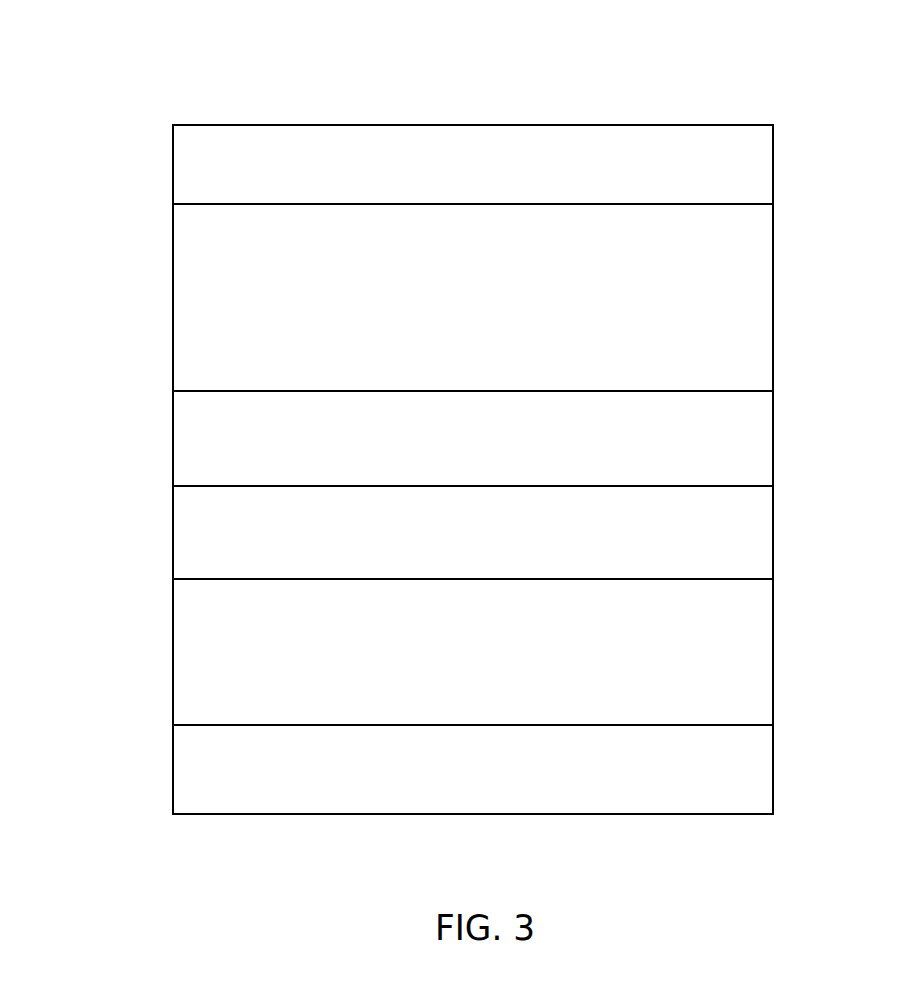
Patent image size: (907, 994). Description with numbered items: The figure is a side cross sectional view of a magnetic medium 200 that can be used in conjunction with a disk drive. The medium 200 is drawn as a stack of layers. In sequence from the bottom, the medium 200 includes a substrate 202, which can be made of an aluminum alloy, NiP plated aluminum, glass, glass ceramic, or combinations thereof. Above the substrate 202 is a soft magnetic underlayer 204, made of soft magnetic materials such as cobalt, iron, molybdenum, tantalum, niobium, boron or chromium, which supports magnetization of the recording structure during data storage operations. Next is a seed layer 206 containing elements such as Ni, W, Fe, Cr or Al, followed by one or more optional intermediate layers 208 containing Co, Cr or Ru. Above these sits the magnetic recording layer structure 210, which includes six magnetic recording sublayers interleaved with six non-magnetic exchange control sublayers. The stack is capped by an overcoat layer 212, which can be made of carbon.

The magnetic medium 200 is at (116, 92).
The substrate 202 is at (773, 771).
The soft magnetic underlayer 204 is at (773, 647).
The seed layer 206 is at (773, 536).
The intermediate layers 208 is at (773, 444).
The magnetic recording layer structure 210 is at (773, 310).
The overcoat layer 212 is at (773, 162).